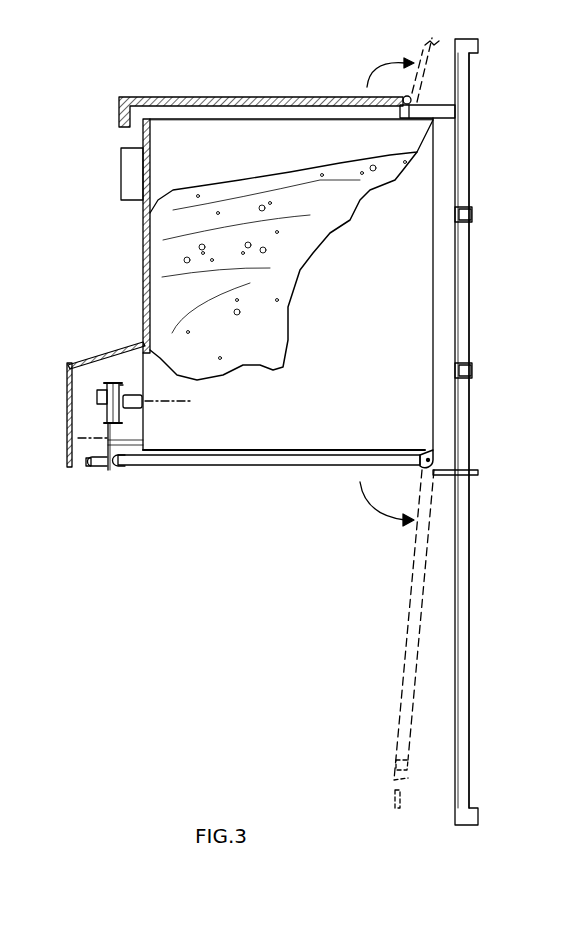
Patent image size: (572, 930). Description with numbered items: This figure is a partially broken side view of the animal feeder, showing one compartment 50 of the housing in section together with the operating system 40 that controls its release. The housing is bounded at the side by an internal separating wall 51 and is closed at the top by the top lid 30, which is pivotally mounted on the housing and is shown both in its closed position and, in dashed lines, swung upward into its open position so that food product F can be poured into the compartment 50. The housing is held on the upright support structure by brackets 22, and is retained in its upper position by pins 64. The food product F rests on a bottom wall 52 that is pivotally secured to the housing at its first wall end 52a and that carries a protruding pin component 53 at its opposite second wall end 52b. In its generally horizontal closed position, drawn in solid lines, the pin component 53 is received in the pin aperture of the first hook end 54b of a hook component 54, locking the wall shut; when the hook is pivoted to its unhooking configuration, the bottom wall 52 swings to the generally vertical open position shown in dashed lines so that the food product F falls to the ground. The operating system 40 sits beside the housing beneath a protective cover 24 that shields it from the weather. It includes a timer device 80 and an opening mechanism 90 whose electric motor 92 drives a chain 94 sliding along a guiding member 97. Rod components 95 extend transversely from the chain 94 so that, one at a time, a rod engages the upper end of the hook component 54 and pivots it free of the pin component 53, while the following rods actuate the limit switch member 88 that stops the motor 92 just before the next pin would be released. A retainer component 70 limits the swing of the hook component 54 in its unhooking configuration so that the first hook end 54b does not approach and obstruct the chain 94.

The top lid 30 is at (178, 97).
The timer device 80 is at (121, 160).
The compartment 50 is at (143, 280).
The internal separating wall 51 is at (291, 142).
The food product F is at (163, 226).
The operating system 40 is at (203, 524).
The protective cover 24 is at (80, 336).
The opening mechanism 90 is at (67, 375).
The limit switch member 88 is at (100, 392).
The rod component 95 is at (103, 420).
The chain 94 is at (113, 382).
The guiding member 97 is at (125, 388).
The electric motor 92 is at (132, 408).
The hook component 54 is at (108, 427).
The first hook end 54b is at (107, 468).
The pin component 53 is at (86, 468).
The retainer component 70 is at (119, 468).
The bottom wall 52 is at (145, 466).
The first wall end 52a is at (430, 505).
The second wall end 52b is at (410, 757).
The pin 64 is at (480, 473).
The bracket 22 is at (473, 213).